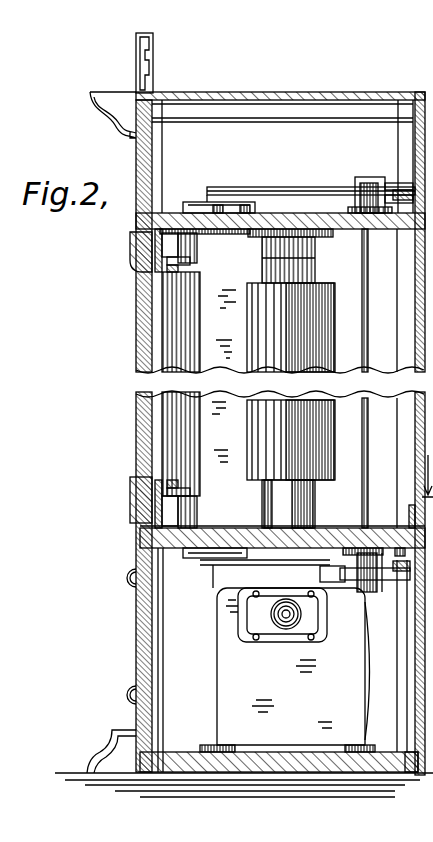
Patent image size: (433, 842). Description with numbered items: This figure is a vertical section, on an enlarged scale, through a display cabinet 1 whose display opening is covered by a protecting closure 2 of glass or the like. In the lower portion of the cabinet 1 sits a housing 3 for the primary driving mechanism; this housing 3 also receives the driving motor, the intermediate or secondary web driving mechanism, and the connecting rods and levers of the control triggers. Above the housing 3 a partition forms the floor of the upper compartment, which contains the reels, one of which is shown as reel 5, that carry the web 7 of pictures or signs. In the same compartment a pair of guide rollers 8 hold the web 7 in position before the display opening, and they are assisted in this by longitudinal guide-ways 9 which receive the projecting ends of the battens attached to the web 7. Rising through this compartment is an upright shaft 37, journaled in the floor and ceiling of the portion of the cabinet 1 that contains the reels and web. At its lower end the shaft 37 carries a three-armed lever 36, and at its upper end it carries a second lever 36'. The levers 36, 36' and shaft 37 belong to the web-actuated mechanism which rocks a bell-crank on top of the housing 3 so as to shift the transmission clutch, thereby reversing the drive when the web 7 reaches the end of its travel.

The display cabinet 1 is at (212, 433).
The protecting closure 2 is at (140, 331).
The housing 3 is at (304, 708).
The reel 5 is at (315, 267).
The web 7 is at (199, 384).
The guide rollers 8 is at (195, 276).
The longitudinal guide-ways 9 is at (130, 250).
The three-armed lever 36 is at (365, 585).
The second lever 36' is at (380, 179).
The upright shaft 37 is at (367, 441).